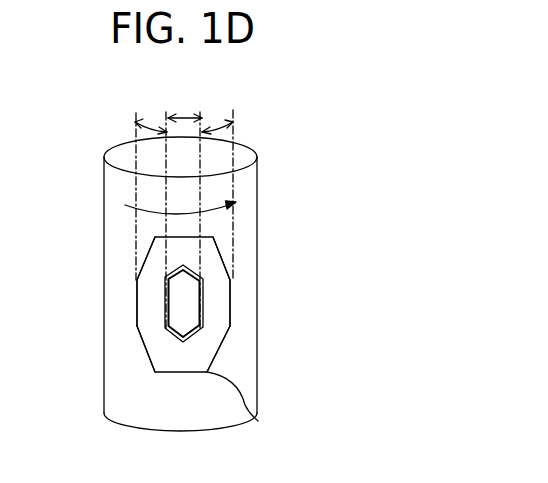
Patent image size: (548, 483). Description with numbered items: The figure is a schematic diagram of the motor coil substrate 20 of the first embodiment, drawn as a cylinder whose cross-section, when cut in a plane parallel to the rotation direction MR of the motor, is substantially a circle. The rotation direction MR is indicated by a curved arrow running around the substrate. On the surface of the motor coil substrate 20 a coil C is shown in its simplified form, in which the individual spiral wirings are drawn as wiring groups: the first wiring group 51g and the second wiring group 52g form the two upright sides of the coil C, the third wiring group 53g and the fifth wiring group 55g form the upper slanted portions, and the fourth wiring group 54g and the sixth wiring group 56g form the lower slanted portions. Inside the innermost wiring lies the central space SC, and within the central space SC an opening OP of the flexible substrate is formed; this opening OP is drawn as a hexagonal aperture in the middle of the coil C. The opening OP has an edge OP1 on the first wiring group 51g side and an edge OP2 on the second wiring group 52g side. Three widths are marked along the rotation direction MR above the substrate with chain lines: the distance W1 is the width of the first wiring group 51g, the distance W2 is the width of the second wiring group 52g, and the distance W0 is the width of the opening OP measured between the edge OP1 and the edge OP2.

The motor coil substrate 20 is at (257, 157).
The rotation direction MR is at (188, 213).
The first wiring group 51g is at (152, 300).
The second wiring group 52g is at (208, 303).
The third wiring group 53g is at (148, 256).
The fourth wiring group 54g is at (150, 345).
The fifth wiring group 55g is at (210, 262).
The sixth wiring group 56g is at (205, 350).
The edge on the first wiring group side OP1 is at (167, 337).
The edge on the second wiring group side OP2 is at (203, 288).
The opening OP is at (198, 290).
The central space SC is at (168, 312).
The coil C is at (242, 406).
The distance W0 is at (186, 106).
The distance W1 is at (127, 118).
The distance W2 is at (229, 112).